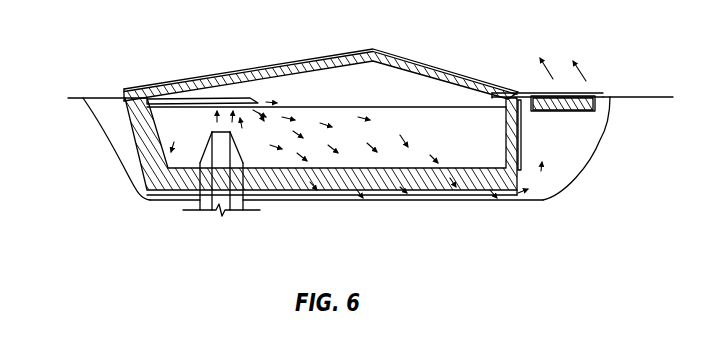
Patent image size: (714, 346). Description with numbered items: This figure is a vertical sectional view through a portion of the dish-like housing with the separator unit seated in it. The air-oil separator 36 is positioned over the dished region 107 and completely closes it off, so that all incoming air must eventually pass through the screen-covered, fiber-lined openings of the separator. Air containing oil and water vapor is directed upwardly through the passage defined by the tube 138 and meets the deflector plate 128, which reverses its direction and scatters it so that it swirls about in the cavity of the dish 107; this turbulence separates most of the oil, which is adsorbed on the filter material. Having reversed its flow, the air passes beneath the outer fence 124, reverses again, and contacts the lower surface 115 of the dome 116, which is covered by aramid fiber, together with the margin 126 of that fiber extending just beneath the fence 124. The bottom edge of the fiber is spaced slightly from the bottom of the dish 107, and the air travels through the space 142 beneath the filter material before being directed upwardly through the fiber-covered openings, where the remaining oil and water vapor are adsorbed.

The air-oil separator 36 is at (223, 57).
The dished region 107 is at (115, 148).
The lower surface of the dome 115 is at (455, 85).
The dome 116 is at (400, 55).
The outer fence 124 is at (173, 118).
The margin 126 is at (182, 187).
The deflector plate 128 is at (243, 101).
The tube 138 is at (237, 180).
The space 142 is at (463, 187).